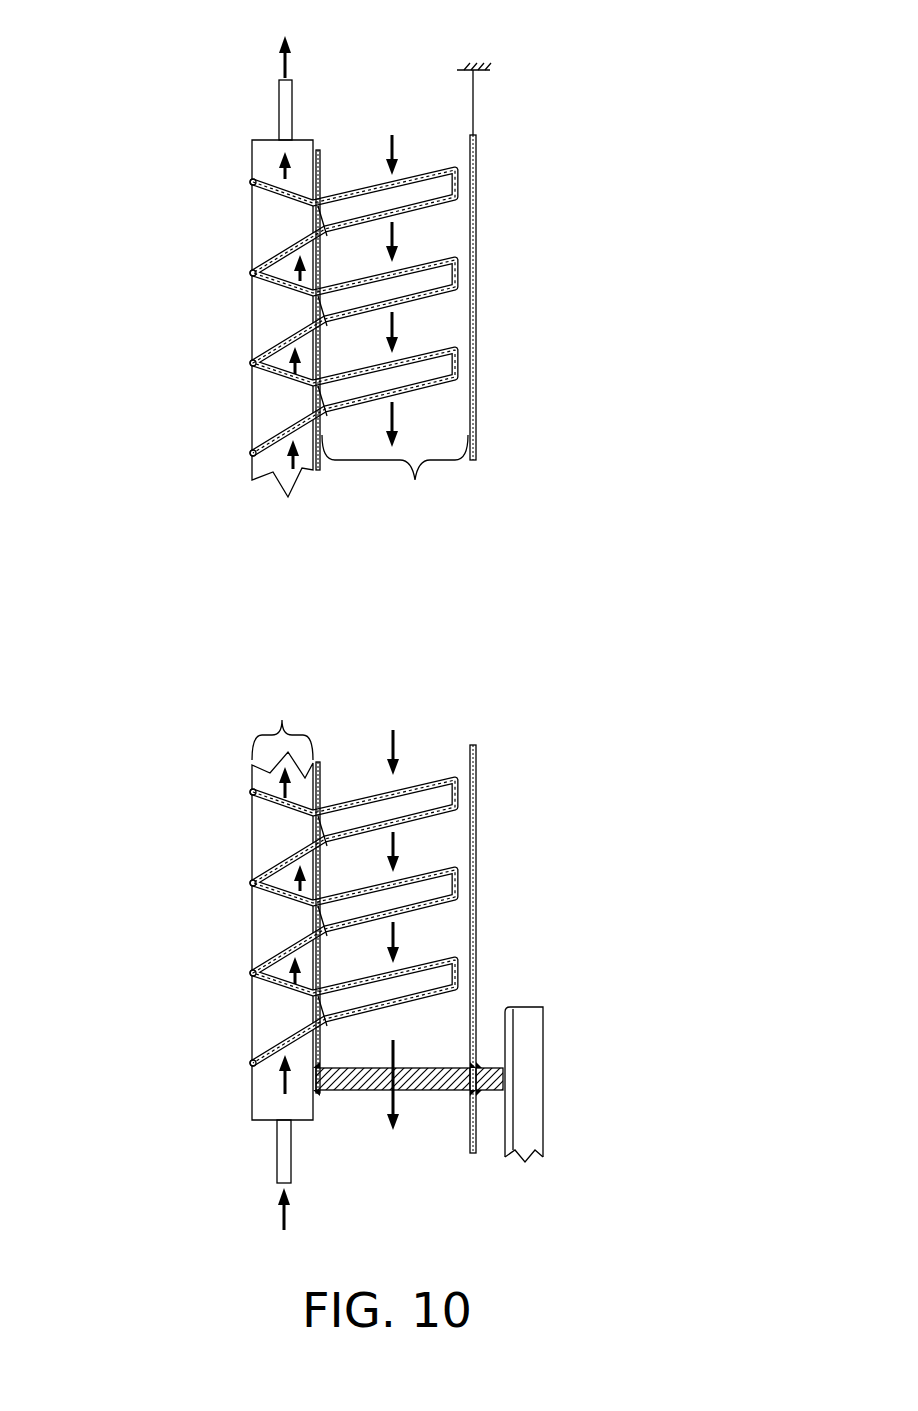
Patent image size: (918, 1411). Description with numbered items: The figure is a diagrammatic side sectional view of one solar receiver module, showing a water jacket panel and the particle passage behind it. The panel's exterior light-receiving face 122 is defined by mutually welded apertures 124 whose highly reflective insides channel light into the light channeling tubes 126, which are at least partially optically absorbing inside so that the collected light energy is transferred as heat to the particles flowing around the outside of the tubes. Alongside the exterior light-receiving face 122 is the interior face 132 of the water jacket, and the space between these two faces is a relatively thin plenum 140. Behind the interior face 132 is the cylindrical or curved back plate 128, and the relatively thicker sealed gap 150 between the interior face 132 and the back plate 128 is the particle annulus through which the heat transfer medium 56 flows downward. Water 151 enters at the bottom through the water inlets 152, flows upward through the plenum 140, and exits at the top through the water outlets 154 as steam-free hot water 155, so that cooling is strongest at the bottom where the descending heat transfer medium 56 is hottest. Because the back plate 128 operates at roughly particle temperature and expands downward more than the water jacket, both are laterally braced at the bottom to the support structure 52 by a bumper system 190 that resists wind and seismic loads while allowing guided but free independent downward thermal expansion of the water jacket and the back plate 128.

The support structure 52 is at (535, 1155).
The heat transfer medium 56 is at (386, 162).
The exterior light-receiving face 122 is at (252, 495).
The apertures 124 is at (308, 235).
The light channeling tubes 126 is at (398, 312).
The back plate 128 is at (477, 268).
The interior face 132 is at (322, 478).
The plenum 140 is at (282, 723).
The sealed gap 150 is at (395, 479).
The water 151 is at (280, 1207).
The water inlets 152 is at (283, 1135).
The water outlets 154 is at (285, 103).
The steam-free hot water 155 is at (283, 70).
The bumper system 190 is at (418, 1092).